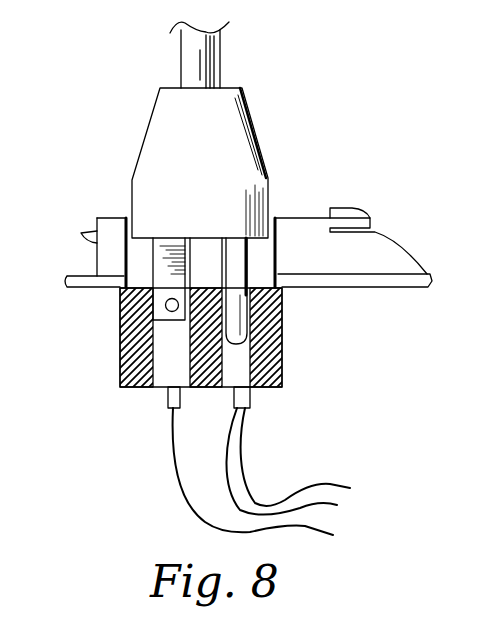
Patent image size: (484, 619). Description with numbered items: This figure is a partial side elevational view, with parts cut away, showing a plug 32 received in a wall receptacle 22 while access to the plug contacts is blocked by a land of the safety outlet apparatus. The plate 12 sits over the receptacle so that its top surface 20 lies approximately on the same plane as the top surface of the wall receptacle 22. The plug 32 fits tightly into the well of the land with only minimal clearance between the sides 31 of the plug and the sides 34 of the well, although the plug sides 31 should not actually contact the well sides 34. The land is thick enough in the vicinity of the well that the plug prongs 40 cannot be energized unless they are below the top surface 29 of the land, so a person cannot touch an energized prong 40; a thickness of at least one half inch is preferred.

The plate 12 is at (342, 280).
The top surface 20 is at (78, 272).
The wall receptacle 22 is at (120, 342).
The top surface 29 is at (303, 217).
The sides 31 is at (147, 120).
The plug 32 is at (212, 137).
The sides 34 is at (120, 252).
The plug prongs 40 is at (160, 293).